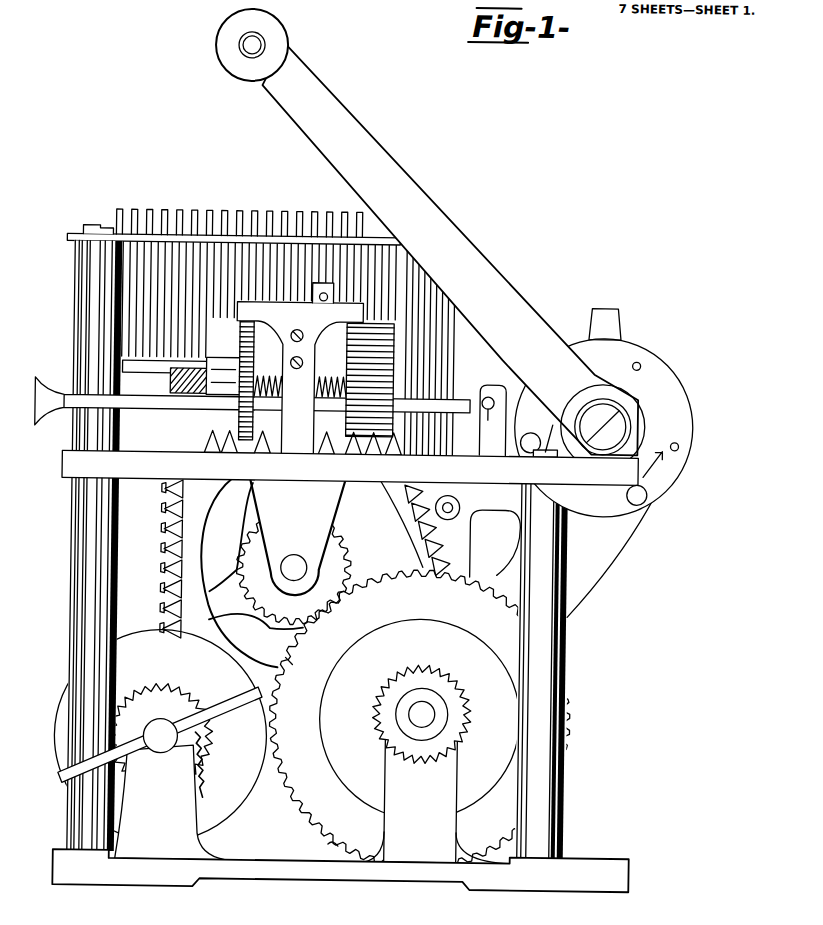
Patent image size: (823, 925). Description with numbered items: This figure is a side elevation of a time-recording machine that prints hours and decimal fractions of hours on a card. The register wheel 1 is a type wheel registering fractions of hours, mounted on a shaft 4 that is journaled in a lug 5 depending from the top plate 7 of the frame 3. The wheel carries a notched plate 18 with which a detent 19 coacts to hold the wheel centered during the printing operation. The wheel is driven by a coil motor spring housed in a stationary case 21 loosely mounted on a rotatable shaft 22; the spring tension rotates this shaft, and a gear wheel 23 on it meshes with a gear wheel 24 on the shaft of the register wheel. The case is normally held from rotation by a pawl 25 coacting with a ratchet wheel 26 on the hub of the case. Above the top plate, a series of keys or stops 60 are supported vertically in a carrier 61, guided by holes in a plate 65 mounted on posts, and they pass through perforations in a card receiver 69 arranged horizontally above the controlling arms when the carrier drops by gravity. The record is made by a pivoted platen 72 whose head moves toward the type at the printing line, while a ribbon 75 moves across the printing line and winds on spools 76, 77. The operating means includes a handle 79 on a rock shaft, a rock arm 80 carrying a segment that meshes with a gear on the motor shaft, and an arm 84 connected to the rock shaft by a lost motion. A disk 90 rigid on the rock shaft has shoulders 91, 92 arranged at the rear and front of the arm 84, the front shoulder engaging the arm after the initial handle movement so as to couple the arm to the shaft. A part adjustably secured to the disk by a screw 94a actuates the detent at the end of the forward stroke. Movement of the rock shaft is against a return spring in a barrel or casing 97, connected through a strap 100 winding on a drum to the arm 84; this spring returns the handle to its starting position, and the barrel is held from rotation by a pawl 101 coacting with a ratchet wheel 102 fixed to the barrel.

The register wheel 1 is at (162, 552).
The frame 3 is at (76, 508).
The shaft 4 is at (294, 556).
The lug 5 is at (333, 511).
The top plate 7 is at (125, 474).
The notched plate 18 is at (165, 604).
The detent 19 is at (498, 506).
The stationary case 21 is at (508, 713).
The rotatable shaft 22 is at (424, 727).
The gear wheel 23 is at (312, 837).
The gear wheel 24 is at (328, 566).
The pawl 25 is at (386, 758).
The ratchet wheel 26 is at (381, 705).
The keys or stops 60 is at (183, 216).
The carrier 61 is at (136, 361).
The plate 65 is at (156, 240).
The card receiver 69 is at (148, 405).
The platen 72 is at (478, 364).
The ribbon 75 is at (491, 420).
The spool 76 is at (206, 433).
The spool 77 is at (355, 455).
The handle 79 is at (480, 261).
The rock arm 80 is at (600, 540).
The arm 84 is at (474, 576).
The disk 90 is at (672, 466).
The shoulder 91 is at (648, 489).
The shoulder 92 is at (540, 453).
The screw 94a is at (635, 359).
The barrel or casing 97 is at (160, 735).
The strap 100 is at (295, 662).
The pawl 101 is at (206, 780).
The ratchet wheel 102 is at (209, 740).